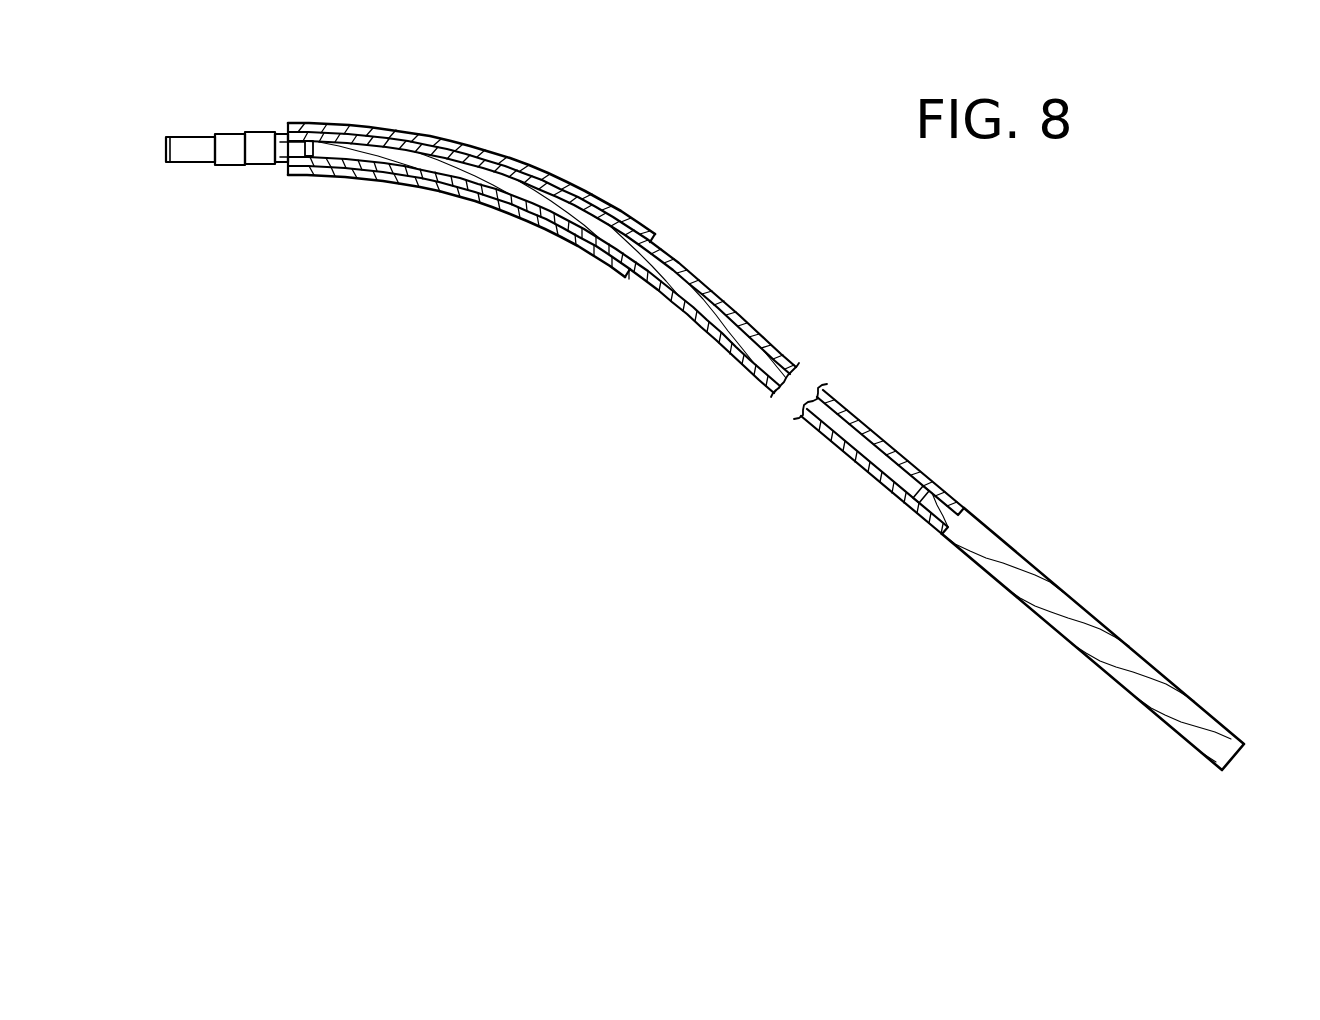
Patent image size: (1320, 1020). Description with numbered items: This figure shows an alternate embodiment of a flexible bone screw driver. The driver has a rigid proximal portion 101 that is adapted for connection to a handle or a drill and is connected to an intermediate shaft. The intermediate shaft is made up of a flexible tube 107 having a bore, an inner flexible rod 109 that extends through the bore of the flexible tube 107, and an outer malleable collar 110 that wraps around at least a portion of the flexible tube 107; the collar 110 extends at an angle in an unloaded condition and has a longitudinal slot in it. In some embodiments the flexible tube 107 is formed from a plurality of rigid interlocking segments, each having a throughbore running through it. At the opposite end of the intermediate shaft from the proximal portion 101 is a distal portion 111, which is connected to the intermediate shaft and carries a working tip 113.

The rigid proximal portion 101 is at (1068, 555).
The flexible tube 107 is at (717, 297).
The inner flexible rod 109 is at (675, 283).
The outer malleable collar 110 is at (615, 210).
The distal portion 111 is at (279, 166).
The working tip 113 is at (187, 150).